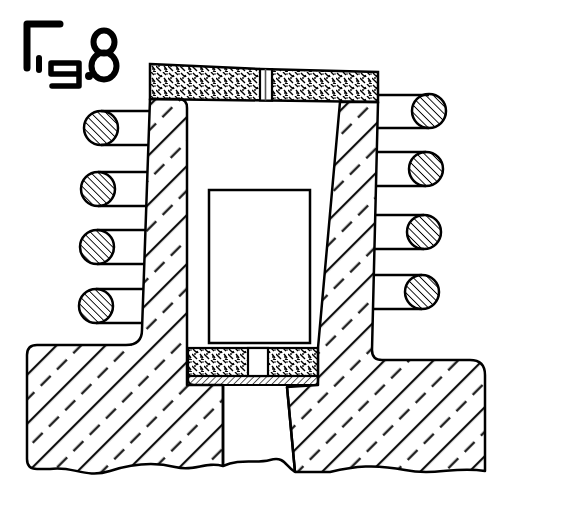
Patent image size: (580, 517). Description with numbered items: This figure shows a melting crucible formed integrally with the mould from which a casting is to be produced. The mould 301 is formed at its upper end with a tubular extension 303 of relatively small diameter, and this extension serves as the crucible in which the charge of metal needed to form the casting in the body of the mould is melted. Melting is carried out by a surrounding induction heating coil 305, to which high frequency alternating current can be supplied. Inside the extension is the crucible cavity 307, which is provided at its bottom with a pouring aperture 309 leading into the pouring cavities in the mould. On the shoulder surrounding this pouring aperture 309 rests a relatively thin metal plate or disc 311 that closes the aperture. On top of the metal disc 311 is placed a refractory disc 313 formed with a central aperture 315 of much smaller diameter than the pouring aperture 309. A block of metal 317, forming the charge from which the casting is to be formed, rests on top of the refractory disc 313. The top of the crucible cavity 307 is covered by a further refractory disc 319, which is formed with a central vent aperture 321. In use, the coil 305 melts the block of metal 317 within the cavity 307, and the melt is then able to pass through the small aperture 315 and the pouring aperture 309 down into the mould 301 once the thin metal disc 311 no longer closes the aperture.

The mould 301 is at (474, 458).
The tubular extension 303 is at (380, 147).
The induction heating coil 305 is at (427, 288).
The crucible cavity 307 is at (250, 153).
The bottom pouring aperture 309 is at (233, 388).
The metal plate or disc 311 is at (295, 472).
The refractory disc 313 is at (230, 349).
The central aperture 315 is at (262, 370).
The block of metal 317 is at (258, 252).
The refractory disc 319 is at (360, 73).
The central vent aperture 321 is at (267, 70).